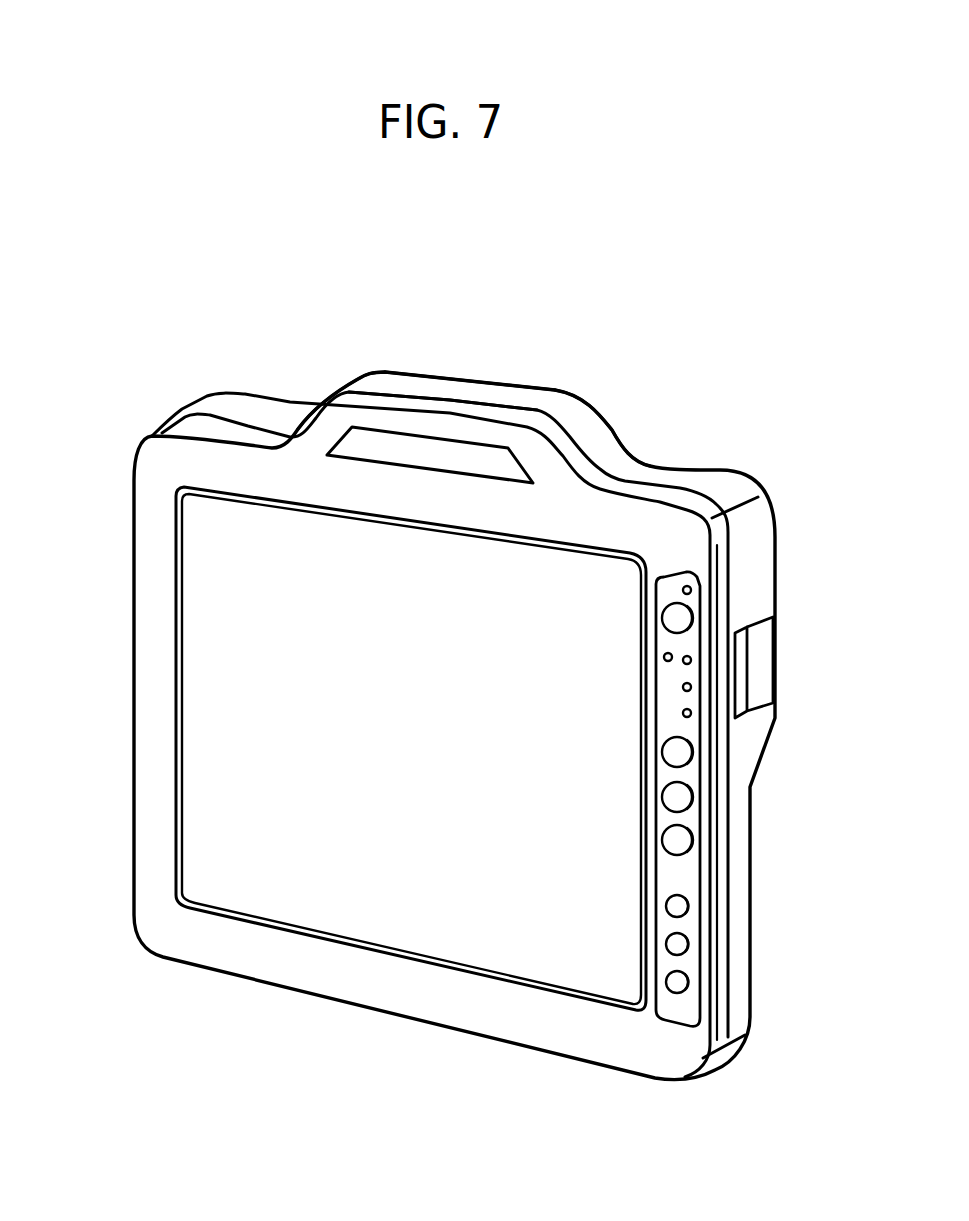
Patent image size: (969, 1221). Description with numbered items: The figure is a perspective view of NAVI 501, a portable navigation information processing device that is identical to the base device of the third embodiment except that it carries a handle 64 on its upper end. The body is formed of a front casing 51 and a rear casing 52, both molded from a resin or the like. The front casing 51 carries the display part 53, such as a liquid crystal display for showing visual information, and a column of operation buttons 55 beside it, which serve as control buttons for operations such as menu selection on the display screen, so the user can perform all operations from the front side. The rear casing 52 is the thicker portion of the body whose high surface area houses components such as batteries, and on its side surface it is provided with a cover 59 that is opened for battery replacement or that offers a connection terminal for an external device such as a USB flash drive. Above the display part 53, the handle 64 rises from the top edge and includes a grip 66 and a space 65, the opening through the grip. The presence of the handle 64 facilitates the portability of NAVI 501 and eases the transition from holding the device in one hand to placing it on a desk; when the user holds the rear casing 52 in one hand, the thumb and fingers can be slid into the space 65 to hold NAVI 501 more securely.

The NAVI 501 is at (575, 345).
The front casing 51 is at (652, 517).
The rear casing 52 is at (600, 453).
The display part 53 is at (222, 633).
The operation buttons 55 is at (678, 838).
The cover 59 is at (757, 675).
The handle 64 is at (298, 300).
The space 65 is at (412, 448).
The grip 66 is at (448, 420).